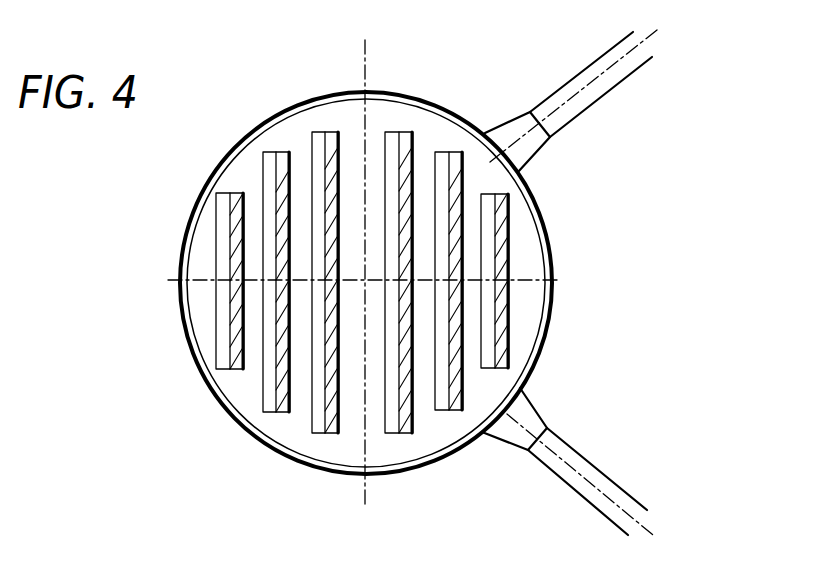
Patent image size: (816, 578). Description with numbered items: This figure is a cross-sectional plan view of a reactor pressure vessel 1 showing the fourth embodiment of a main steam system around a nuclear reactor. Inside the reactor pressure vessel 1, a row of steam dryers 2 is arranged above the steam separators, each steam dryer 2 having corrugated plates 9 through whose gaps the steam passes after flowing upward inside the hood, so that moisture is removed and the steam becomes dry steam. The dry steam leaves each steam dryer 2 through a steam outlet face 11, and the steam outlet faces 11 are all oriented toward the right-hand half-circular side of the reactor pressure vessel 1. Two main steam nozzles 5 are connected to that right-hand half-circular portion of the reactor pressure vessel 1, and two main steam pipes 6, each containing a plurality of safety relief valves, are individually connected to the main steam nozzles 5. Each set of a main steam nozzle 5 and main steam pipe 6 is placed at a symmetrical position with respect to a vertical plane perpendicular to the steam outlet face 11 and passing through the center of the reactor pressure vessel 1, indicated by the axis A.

The reactor pressure vessel 1 is at (383, 92).
The steam dryer 2 is at (216, 320).
The main steam nozzle 5 is at (522, 113).
The main steam pipe 6 is at (588, 70).
The corrugated plate 9 is at (240, 193).
The steam outlet face 11 is at (247, 293).
The axis A is at (362, 487).